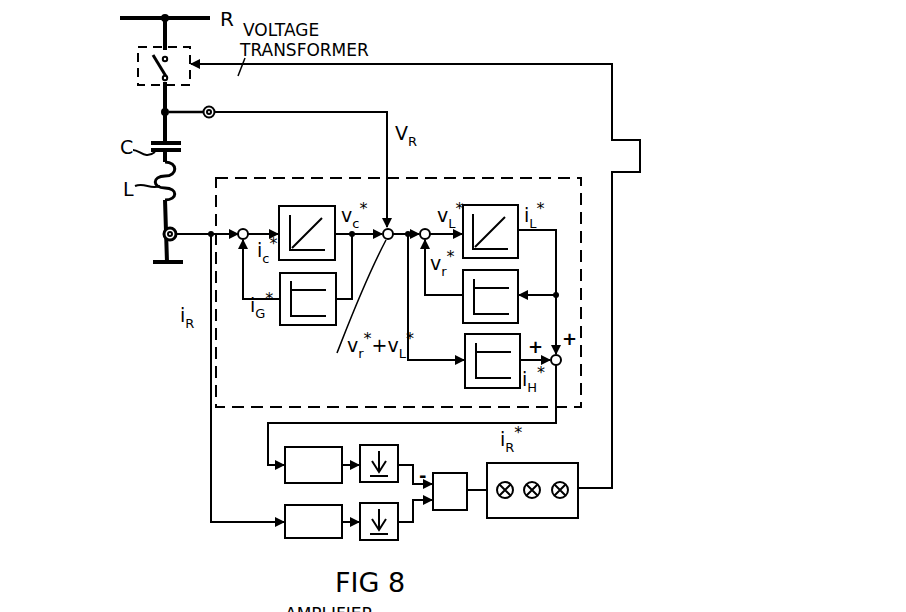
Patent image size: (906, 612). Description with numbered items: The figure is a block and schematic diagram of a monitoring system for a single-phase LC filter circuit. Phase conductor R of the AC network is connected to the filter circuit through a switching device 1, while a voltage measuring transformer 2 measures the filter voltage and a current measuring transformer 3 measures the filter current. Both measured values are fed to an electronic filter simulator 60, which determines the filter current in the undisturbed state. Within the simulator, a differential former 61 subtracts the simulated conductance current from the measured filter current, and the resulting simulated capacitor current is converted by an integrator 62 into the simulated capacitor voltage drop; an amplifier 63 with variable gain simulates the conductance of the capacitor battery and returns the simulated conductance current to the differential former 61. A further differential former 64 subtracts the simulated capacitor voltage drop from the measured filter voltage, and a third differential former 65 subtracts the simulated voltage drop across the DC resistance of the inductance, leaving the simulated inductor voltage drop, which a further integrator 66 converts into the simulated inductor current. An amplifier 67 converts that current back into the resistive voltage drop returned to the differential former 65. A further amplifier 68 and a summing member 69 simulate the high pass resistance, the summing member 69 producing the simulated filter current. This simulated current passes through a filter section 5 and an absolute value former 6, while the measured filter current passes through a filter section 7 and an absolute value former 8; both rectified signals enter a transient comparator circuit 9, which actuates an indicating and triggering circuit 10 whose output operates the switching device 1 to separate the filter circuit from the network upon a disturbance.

The switching device 1 is at (138, 80).
The voltage measuring transformer 2 is at (212, 107).
The current measuring transformer 3 is at (133, 212).
The filter section 5 is at (200, 441).
The absolute value former 6 is at (340, 560).
The filter section 7 is at (203, 447).
The absolute value former 8 is at (342, 562).
The transient comparator circuit 9 is at (463, 503).
The indicating and triggering circuit 10 is at (535, 519).
The electronic filter simulator 60 is at (462, 178).
The differential former 61 is at (243, 229).
The integrator 62 is at (328, 172).
The amplifier 63 is at (207, 364).
The differential former 64 is at (388, 240).
The third differential former 65 is at (423, 229).
The further integrator 66 is at (497, 205).
The amplifier 67 is at (463, 313).
The further amplifier 68 is at (608, 306).
The summing member 69 is at (561, 363).